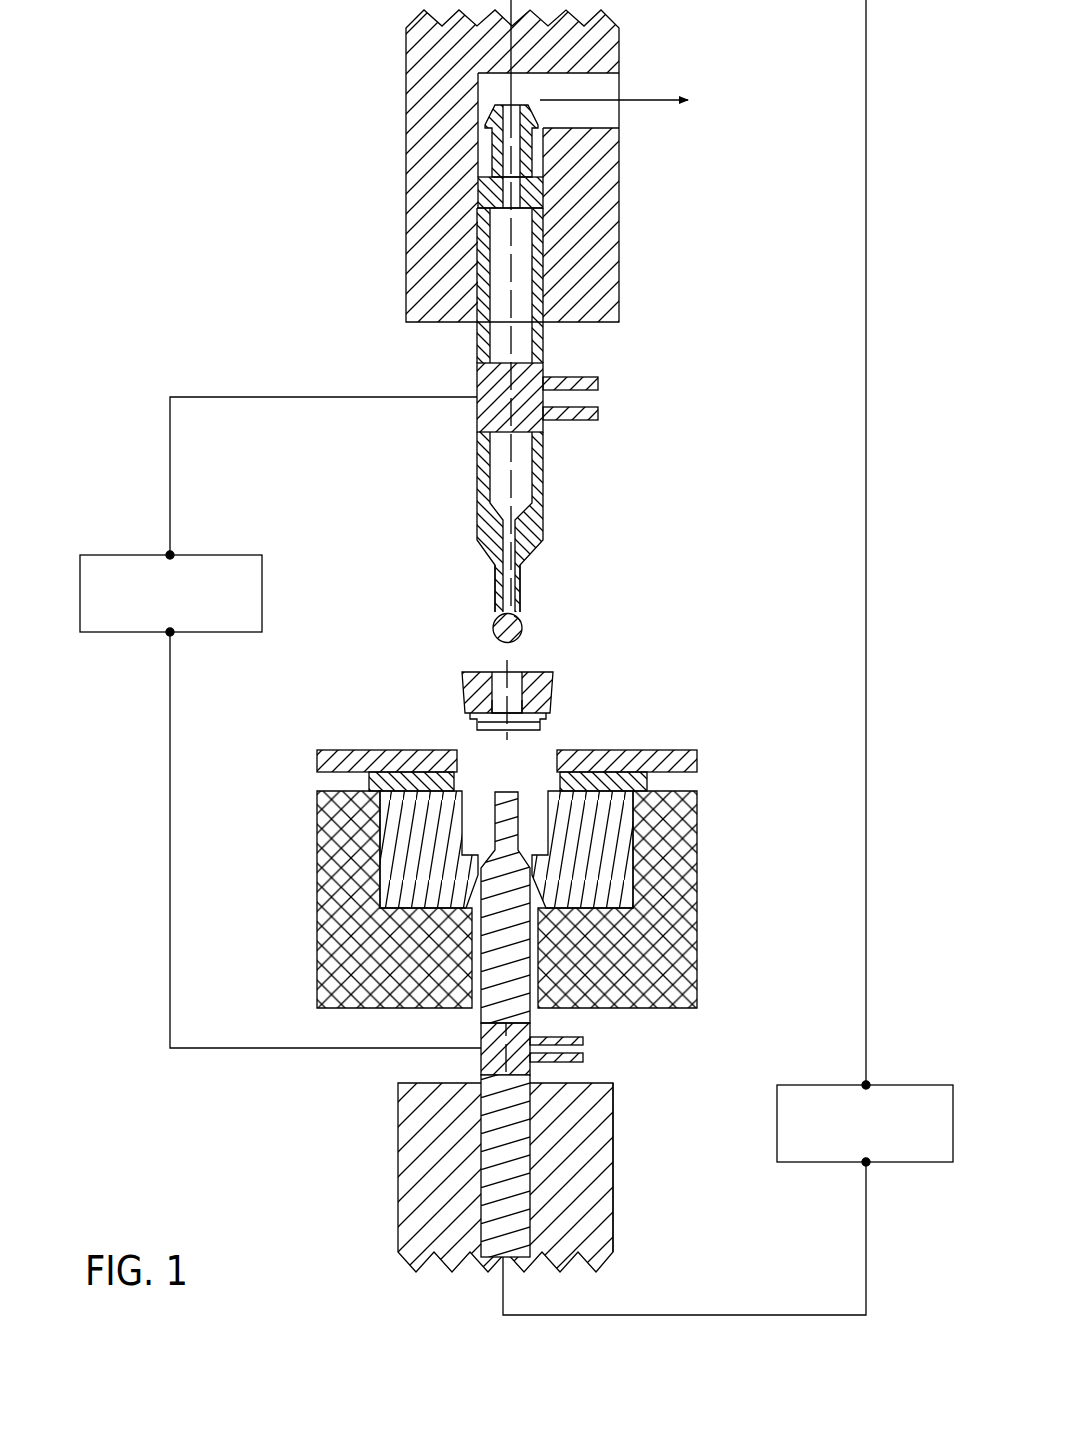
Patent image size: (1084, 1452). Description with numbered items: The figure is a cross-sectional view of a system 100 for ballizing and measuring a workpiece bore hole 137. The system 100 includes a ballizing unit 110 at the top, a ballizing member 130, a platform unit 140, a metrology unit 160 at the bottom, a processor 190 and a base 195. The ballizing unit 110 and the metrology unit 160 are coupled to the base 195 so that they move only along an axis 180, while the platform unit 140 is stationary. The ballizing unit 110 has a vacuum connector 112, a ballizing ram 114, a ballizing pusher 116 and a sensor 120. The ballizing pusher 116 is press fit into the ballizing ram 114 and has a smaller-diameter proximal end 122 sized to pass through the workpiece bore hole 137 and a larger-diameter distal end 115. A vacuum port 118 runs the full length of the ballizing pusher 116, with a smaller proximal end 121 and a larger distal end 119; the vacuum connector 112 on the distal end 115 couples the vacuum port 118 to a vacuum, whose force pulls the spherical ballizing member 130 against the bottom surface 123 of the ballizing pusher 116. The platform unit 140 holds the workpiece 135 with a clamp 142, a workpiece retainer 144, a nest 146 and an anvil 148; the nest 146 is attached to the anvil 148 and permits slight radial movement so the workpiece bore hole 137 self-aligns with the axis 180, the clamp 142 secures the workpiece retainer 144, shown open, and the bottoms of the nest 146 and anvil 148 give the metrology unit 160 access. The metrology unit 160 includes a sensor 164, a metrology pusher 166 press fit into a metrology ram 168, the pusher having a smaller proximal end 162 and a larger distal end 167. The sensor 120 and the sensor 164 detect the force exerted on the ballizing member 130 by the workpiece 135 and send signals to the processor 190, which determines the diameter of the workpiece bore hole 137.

The system 100 is at (240, 114).
The ballizing unit 110 is at (636, 74).
The vacuum connector 112 is at (497, 110).
The ballizing ram 114 is at (619, 172).
The distal end of ballizing pusher 115 is at (500, 212).
The ballizing pusher 116 is at (547, 262).
The vacuum port 118 is at (513, 352).
The distal end of vacuum port 119 is at (532, 230).
The sensor 120 is at (477, 408).
The proximal end of vacuum port 121 is at (520, 576).
The proximal end of ballizing pusher 122 is at (495, 582).
The bottom surface of ballizing pusher 123 is at (522, 627).
The ballizing member 130 is at (494, 627).
The workpiece 135 is at (540, 672).
The workpiece bore hole 137 is at (523, 692).
The platform unit 140 is at (724, 871).
The clamp 142 is at (317, 772).
The workpiece retainer 144 is at (645, 772).
The nest 146 is at (380, 837).
The anvil 148 is at (697, 930).
The metrology unit 160 is at (421, 1062).
The proximal end of metrology pusher 162 is at (520, 826).
The sensor 164 is at (585, 1040).
The metrology pusher 166 is at (530, 1122).
The distal end of metrology pusher 167 is at (480, 1186).
The metrology ram 168 is at (613, 1200).
The axis 180 is at (503, 1292).
The processor 190 is at (220, 555).
The base 195 is at (922, 1085).